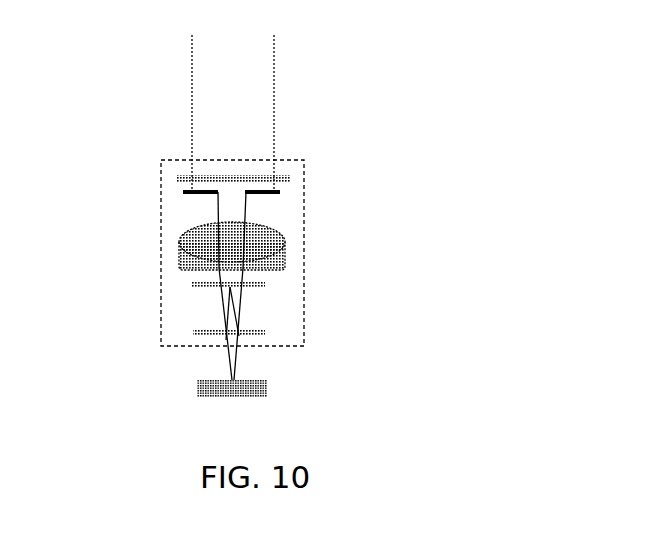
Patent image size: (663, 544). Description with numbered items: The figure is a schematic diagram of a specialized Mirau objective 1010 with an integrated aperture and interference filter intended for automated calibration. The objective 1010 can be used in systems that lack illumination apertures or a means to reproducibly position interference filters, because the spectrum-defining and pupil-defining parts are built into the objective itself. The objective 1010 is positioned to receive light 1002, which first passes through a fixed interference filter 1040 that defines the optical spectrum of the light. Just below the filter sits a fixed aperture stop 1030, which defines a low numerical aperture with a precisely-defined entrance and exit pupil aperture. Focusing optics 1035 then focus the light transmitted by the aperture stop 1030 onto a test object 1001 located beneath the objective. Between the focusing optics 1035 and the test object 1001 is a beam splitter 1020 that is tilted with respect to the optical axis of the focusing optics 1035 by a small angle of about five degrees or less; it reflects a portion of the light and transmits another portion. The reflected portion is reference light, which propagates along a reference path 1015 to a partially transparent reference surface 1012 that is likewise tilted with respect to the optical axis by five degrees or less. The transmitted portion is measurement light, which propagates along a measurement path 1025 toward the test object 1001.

The test object 1001 is at (200, 397).
The light 1002 is at (233, 113).
The Mirau objective 1010 is at (305, 210).
The partially transparent reference surface 1012 is at (265, 282).
The reference path 1015 is at (237, 303).
The beam splitter 1020 is at (265, 333).
The measurement path 1025 is at (235, 362).
The fixed aperture stop 1030 is at (187, 192).
The focusing optics 1035 is at (200, 243).
The fixed interference filter 1040 is at (177, 180).